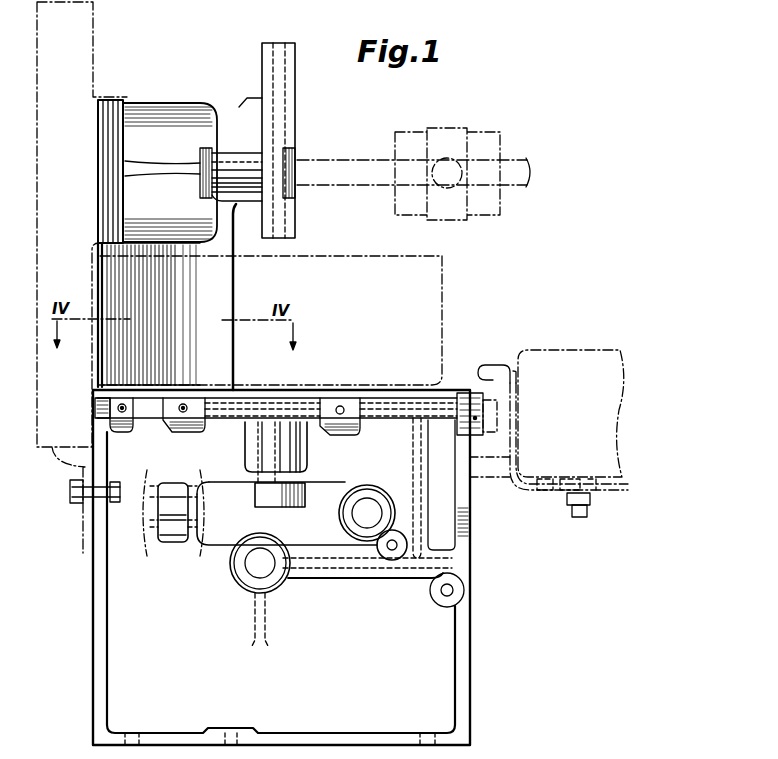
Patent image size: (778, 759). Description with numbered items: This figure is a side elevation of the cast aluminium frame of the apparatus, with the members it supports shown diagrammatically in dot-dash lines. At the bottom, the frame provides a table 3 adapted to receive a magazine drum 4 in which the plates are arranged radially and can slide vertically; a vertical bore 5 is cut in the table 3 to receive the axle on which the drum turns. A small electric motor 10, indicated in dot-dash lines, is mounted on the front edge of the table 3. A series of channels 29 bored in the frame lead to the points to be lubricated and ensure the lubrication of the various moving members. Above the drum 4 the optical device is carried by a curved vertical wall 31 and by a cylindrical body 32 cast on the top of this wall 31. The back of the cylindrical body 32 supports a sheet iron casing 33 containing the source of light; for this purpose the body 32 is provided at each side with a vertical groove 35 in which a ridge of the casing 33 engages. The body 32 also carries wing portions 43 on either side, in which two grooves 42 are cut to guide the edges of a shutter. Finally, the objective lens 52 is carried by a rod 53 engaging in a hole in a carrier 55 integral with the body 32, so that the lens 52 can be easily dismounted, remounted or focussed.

The table 3 is at (325, 392).
The magazine drum 4 is at (443, 303).
The vertical bore 5 is at (243, 455).
The electric motor 10 is at (549, 433).
The channels 29 is at (377, 408).
The curved vertical wall 31 is at (180, 310).
The cylindrical body 32 is at (180, 107).
The sheet iron casing 33 is at (92, 62).
The vertical groove 35 is at (113, 164).
The grooves 42 is at (287, 72).
The wing portions 43 is at (297, 101).
The objective lens 52 is at (476, 219).
The rod 53 is at (331, 187).
The carrier 55 is at (237, 153).